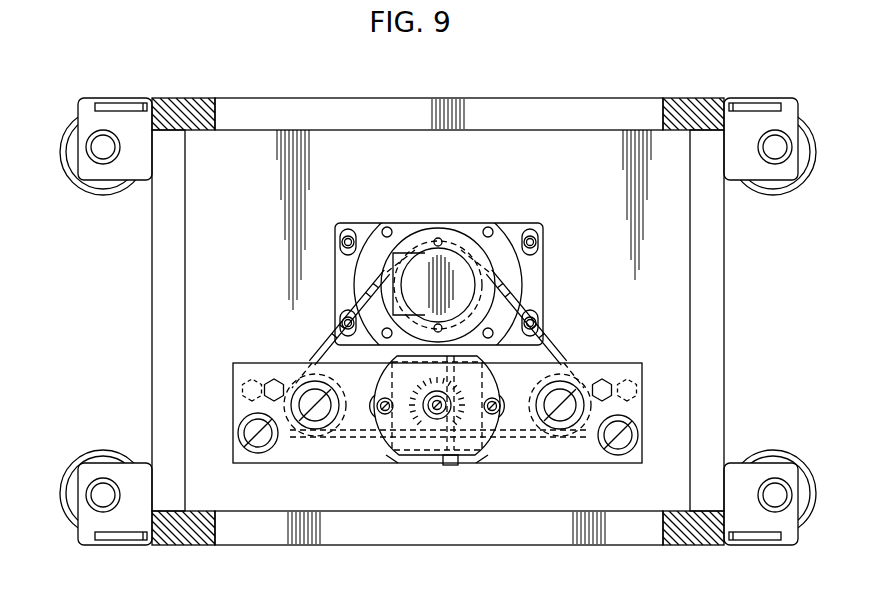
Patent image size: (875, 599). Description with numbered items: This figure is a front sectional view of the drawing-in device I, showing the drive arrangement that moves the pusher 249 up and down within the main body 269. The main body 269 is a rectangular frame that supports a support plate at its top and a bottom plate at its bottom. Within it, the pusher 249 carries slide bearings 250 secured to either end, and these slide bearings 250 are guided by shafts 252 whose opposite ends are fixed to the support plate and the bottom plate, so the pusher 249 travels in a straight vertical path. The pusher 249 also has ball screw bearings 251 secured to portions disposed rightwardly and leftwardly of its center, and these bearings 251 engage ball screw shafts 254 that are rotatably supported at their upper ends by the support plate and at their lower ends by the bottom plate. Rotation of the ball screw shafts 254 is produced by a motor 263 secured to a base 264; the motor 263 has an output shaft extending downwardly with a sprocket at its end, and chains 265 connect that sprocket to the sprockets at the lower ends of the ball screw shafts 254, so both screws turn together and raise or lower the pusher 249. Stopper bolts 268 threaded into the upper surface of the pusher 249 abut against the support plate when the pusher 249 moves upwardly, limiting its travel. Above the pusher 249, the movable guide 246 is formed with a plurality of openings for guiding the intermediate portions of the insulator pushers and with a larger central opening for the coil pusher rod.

The drawing-in device I is at (585, 112).
The movable guide 246 is at (478, 440).
The pusher 249 is at (386, 455).
The slide bearings 250 is at (237, 433).
The ball screw bearings 251 is at (313, 426).
The shafts 252 is at (258, 445).
The ball screw shafts 254 is at (321, 420).
The motor 263 is at (445, 257).
The base 264 is at (378, 248).
The chains 265 is at (555, 377).
The stopper bolts 268 is at (274, 378).
The main body 269 is at (715, 297).